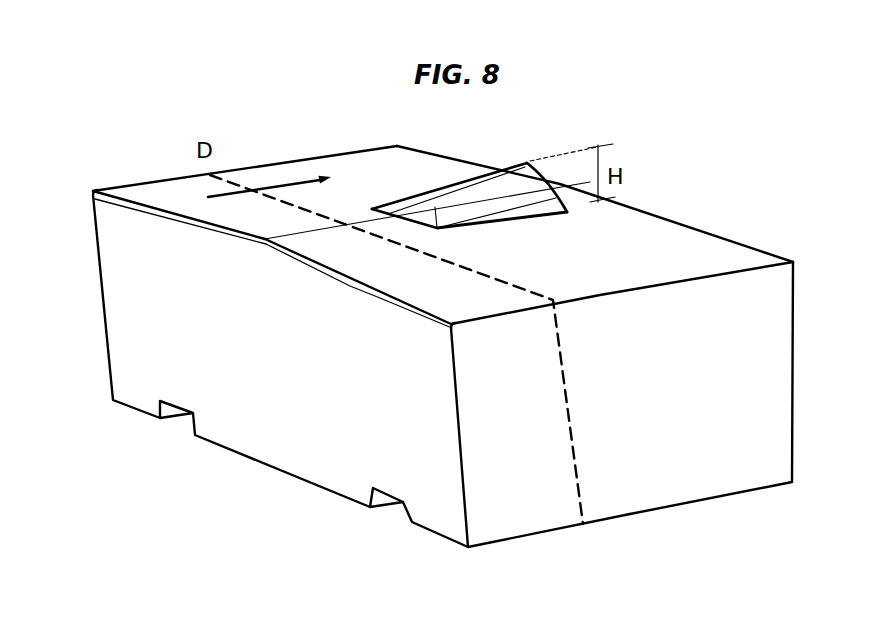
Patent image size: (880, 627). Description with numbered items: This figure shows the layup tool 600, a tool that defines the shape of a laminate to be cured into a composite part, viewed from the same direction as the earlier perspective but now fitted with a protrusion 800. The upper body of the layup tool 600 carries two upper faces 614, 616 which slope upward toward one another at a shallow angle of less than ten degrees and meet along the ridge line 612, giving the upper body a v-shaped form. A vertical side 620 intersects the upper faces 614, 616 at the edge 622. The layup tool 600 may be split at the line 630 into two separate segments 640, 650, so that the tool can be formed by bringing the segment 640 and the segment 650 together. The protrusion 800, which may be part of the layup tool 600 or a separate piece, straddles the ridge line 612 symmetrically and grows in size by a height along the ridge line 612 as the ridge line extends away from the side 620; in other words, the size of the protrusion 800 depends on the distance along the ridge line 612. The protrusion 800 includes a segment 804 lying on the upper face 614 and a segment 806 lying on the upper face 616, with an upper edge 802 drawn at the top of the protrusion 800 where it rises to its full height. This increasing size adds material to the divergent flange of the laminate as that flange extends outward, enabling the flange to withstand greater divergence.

The layup tool 600 is at (416, 359).
The ridge line 612 is at (296, 233).
The upper face 614 is at (683, 238).
The upper face 616 is at (347, 165).
The vertical side 620 is at (247, 427).
The edge 622 is at (364, 295).
The line 630 is at (572, 413).
The segment 640 is at (539, 558).
The segment 650 is at (704, 524).
The protrusion 800 is at (488, 181).
The leading edge 802 is at (521, 161).
The segment 804 is at (497, 198).
The segment 806 is at (413, 214).